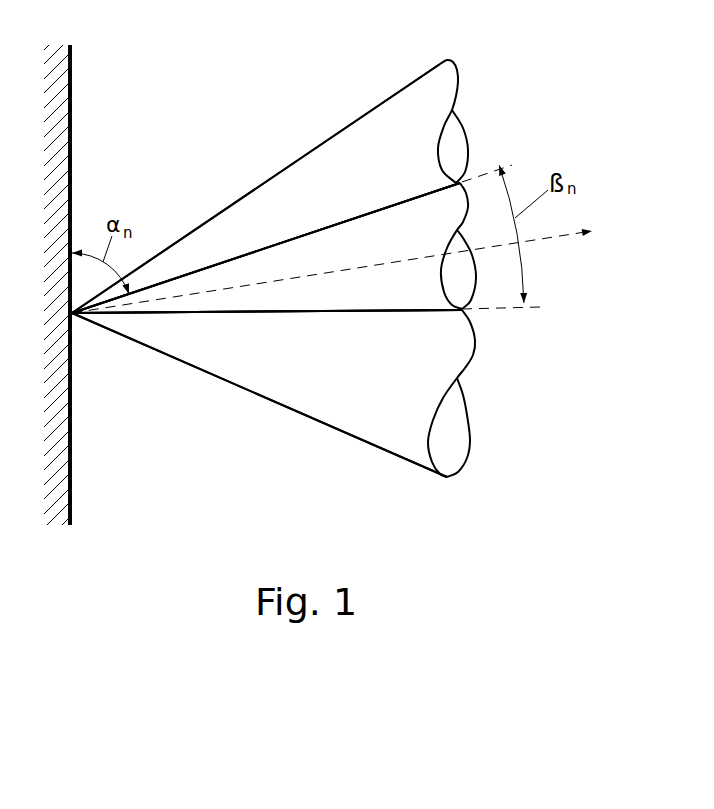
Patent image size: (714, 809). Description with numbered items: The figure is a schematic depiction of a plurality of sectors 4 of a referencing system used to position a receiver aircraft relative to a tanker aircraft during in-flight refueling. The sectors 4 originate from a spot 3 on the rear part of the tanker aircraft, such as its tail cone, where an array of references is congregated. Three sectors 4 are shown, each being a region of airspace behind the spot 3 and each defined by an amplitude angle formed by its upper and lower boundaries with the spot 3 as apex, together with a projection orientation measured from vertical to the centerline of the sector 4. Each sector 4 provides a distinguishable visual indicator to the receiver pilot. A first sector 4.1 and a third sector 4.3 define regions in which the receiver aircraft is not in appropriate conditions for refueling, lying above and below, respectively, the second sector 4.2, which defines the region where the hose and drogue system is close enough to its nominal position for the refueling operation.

The spot 3 is at (80, 322).
The sector 4 is at (313, 277).
The first sector 4.1 is at (375, 120).
The second sector 4.2 is at (438, 214).
The third sector 4.3 is at (390, 433).